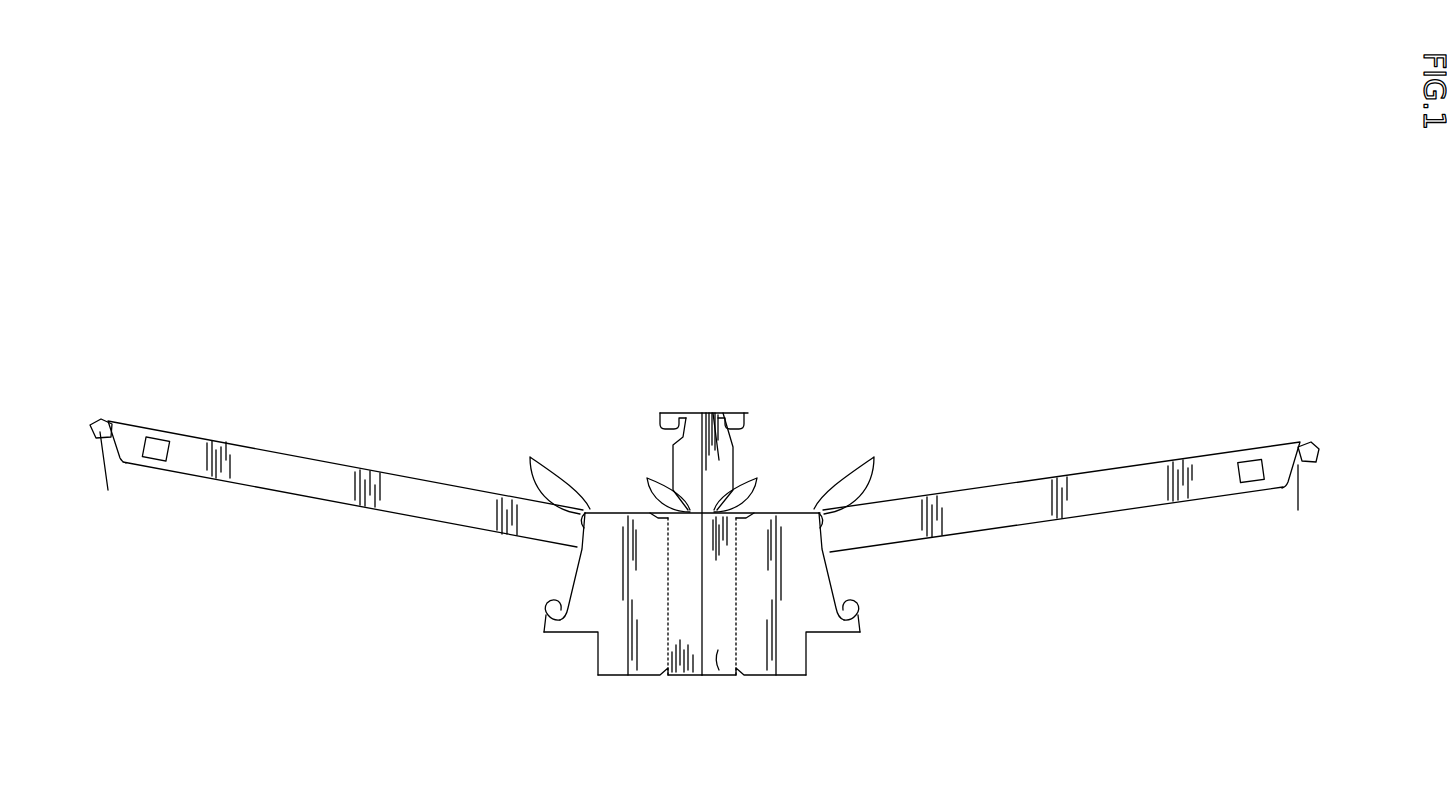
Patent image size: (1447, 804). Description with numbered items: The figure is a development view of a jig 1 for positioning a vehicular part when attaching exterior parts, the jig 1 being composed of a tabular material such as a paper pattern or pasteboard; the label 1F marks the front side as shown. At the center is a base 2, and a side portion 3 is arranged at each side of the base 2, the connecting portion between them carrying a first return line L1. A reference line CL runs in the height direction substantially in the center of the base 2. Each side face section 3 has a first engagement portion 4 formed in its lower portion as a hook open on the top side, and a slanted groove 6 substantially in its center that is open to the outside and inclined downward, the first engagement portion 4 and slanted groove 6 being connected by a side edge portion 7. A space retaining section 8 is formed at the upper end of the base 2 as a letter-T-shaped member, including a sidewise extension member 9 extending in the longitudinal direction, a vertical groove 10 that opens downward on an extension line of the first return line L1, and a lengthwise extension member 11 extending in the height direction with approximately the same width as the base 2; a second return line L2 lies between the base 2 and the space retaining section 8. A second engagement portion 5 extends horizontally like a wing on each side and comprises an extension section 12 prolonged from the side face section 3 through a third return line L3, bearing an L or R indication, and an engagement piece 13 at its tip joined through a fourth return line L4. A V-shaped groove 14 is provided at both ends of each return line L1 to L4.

The jig 1 is at (428, 355).
The front side 1F is at (408, 642).
The base 2 is at (723, 673).
The side portion 3 is at (617, 632).
The first engagement portion 4 is at (543, 607).
The second engagement portion 5 is at (265, 512).
The slanted groove 6 is at (618, 515).
The side edge portion 7 is at (573, 583).
The space retaining section 8 is at (745, 447).
The sidewise extension member 9 is at (704, 435).
The vertical groove 10 is at (663, 415).
The lengthwise extension member 11 is at (702, 460).
The extension section 12 is at (343, 493).
The engagement piece 13 is at (101, 425).
The V-shaped groove 14 is at (753, 730).
The first return line L1 is at (668, 636).
The second return line L2 is at (725, 412).
The third return line L3 is at (585, 520).
The fourth return line L4 is at (135, 425).
The reference line CL is at (702, 655).